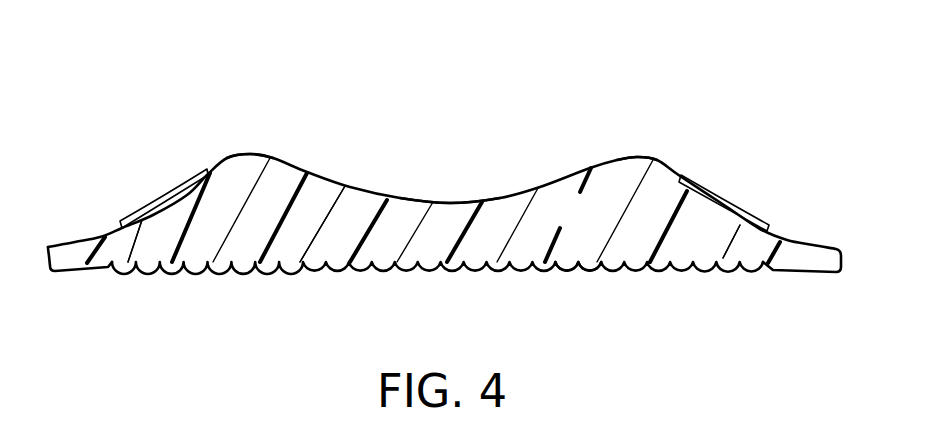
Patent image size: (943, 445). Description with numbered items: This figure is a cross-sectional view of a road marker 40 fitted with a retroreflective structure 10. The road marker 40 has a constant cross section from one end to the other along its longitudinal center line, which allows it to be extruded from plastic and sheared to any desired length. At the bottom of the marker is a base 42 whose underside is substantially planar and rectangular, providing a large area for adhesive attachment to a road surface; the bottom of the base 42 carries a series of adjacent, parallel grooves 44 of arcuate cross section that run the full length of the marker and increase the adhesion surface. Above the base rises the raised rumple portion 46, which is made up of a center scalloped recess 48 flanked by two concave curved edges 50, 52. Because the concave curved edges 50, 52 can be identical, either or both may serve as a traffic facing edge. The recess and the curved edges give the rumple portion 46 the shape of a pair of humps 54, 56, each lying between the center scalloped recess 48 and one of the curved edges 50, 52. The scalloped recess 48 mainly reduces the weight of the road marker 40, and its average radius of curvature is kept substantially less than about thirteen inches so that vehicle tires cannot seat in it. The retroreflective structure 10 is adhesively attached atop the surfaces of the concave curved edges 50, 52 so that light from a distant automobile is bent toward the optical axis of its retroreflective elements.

The road marker 40 is at (183, 89).
The retroreflective structure 10 is at (165, 203).
The base 42 is at (588, 259).
The grooves 44 is at (467, 271).
The raised rumple portion 46 is at (347, 184).
The center scalloped recess 48 is at (452, 200).
The concave curved edge 50 is at (724, 213).
The concave curved edge 52 is at (152, 215).
The hump 54 is at (632, 155).
The hump 56 is at (262, 151).